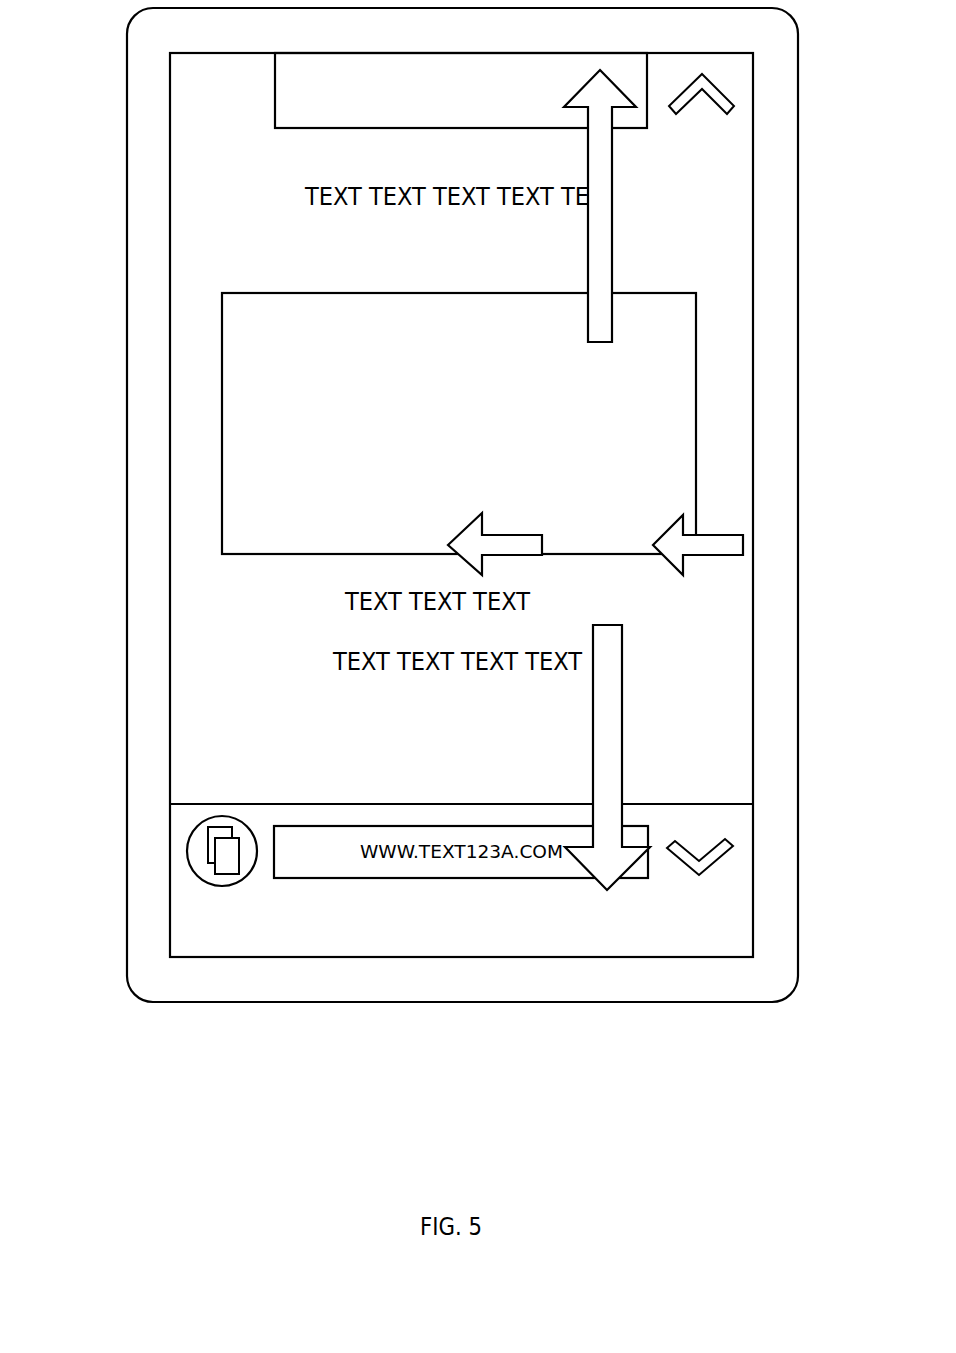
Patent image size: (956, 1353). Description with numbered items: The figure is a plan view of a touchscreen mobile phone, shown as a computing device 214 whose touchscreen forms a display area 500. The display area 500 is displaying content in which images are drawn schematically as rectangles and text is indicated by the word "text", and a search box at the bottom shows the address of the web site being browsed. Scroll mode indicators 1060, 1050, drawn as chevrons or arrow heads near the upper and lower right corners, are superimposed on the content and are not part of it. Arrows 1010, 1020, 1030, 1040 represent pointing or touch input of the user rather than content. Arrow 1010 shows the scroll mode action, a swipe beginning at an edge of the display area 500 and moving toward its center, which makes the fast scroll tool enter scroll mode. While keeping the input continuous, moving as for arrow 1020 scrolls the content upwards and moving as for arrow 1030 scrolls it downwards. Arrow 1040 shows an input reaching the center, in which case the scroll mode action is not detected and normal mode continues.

The computing device 214 is at (127, 690).
The display area 500 is at (737, 397).
The arrow 1010 is at (743, 541).
The arrow 1020 is at (612, 183).
The arrow 1030 is at (622, 735).
The arrow 1040 is at (500, 533).
The scroll mode indicator 1050 is at (727, 845).
The scroll mode indicator 1060 is at (714, 92).